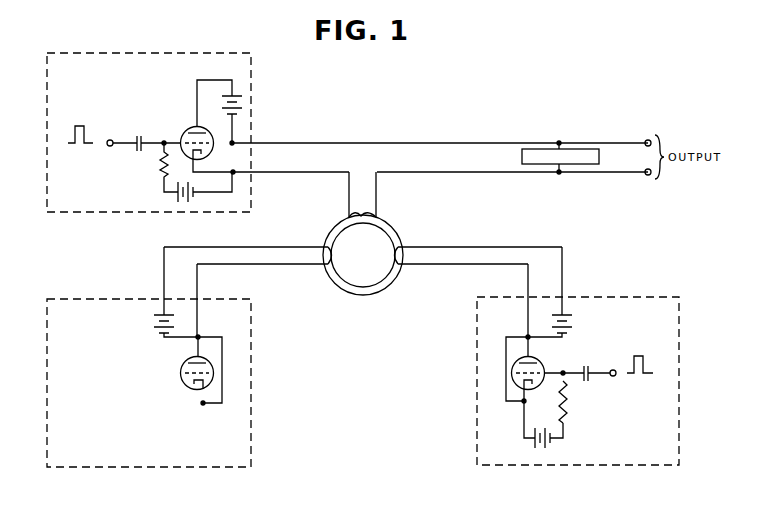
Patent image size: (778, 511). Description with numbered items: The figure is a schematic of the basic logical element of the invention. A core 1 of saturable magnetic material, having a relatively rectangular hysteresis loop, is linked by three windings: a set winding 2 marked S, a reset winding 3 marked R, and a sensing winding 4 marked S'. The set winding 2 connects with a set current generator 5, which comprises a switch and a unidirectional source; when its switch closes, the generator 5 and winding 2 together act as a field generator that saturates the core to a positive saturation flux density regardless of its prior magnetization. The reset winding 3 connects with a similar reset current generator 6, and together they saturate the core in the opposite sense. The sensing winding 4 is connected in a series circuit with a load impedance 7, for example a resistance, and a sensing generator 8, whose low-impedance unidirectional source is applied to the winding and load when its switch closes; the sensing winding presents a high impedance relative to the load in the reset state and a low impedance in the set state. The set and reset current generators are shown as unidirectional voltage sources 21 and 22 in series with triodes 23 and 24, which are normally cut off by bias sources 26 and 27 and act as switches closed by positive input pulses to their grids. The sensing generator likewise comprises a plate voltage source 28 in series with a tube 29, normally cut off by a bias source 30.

The core 1 is at (357, 243).
The set winding 2 is at (331, 259).
The reset winding 3 is at (394, 262).
The sensing winding 4 is at (353, 223).
The set current generator 5 is at (363, 382).
The reset current generator 6 is at (565, 381).
The load impedance 7 is at (522, 156).
The sensing generator 8 is at (161, 132).
The unidirectional voltage source 21 is at (154, 319).
The unidirectional voltage source 22 is at (576, 320).
The triode 23 is at (373, 381).
The triode 24 is at (540, 363).
The bias source 26 is at (185, 430).
The bias source 27 is at (546, 429).
The plate voltage source 28 is at (244, 100).
The tube 29 is at (186, 131).
The bias source 30 is at (176, 201).